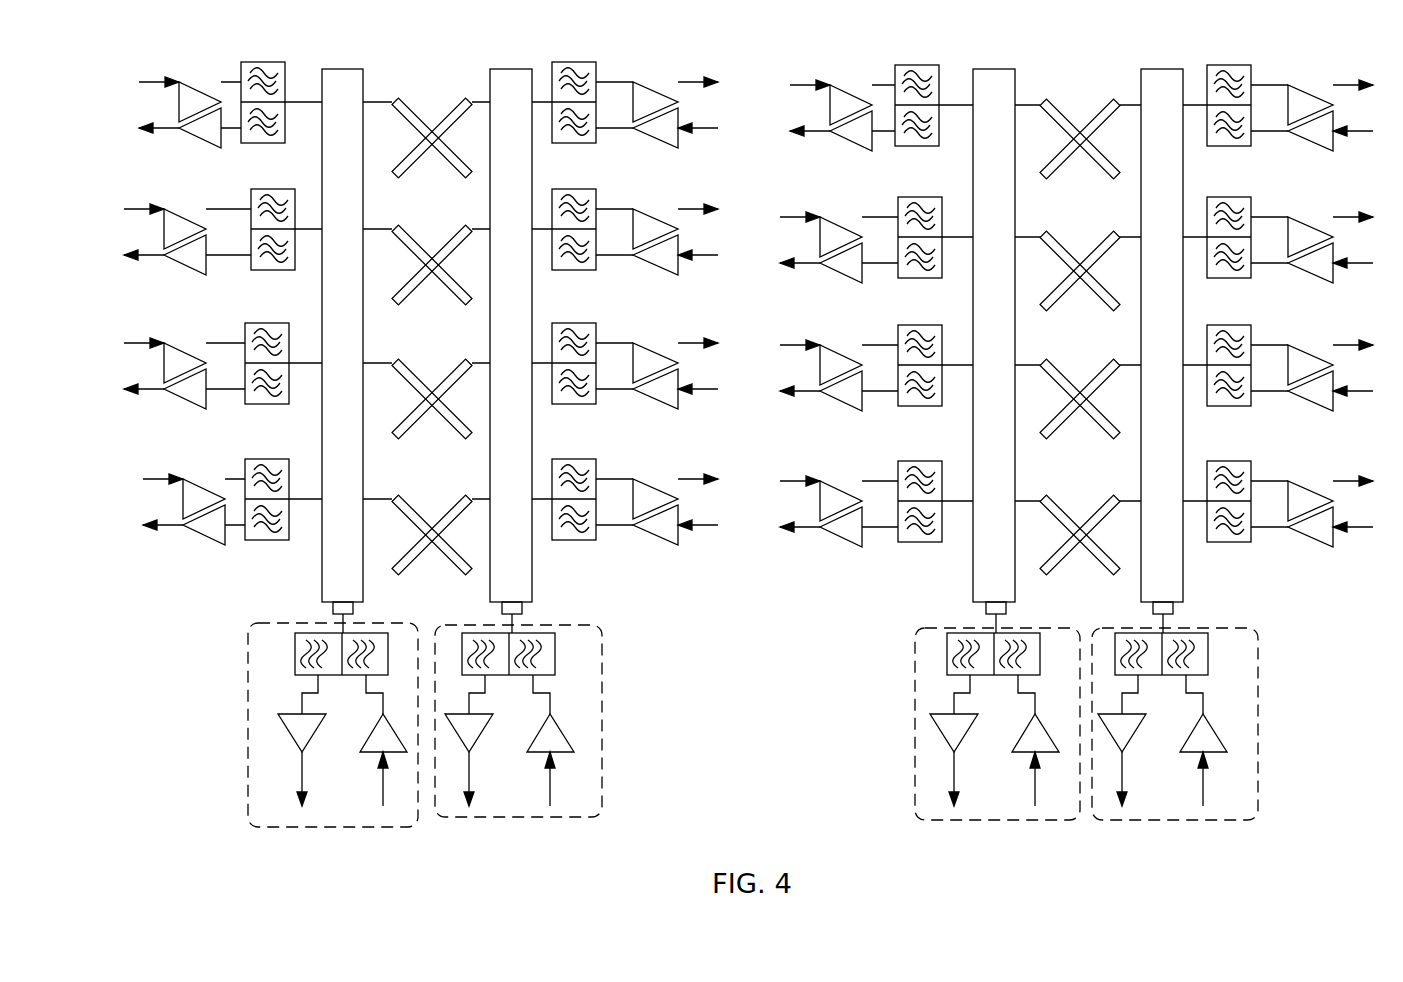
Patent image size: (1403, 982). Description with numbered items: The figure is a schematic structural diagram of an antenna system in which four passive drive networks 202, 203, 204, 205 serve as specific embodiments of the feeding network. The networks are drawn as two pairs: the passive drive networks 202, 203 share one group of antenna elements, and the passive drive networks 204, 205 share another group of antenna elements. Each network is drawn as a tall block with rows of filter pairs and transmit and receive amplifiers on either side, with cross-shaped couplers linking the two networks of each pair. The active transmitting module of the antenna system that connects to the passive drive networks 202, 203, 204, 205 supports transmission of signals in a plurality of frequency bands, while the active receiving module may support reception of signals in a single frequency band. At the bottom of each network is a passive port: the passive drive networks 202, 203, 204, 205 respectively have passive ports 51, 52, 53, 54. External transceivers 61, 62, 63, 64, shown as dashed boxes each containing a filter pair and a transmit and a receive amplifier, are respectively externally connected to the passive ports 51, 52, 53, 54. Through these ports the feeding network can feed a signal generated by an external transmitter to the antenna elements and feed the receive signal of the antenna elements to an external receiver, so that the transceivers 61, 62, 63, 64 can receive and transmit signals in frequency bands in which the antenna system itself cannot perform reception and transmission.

The passive drive network 202 is at (345, 69).
The passive drive network 203 is at (512, 69).
The passive drive network 204 is at (996, 69).
The passive drive network 205 is at (1164, 69).
The passive port 51 is at (353, 607).
The passive port 52 is at (522, 606).
The passive port 53 is at (1006, 609).
The passive port 54 is at (1173, 609).
The external transceiver 61 is at (248, 688).
The external transceiver 62 is at (602, 690).
The external transceiver 63 is at (915, 687).
The external transceiver 64 is at (1258, 693).